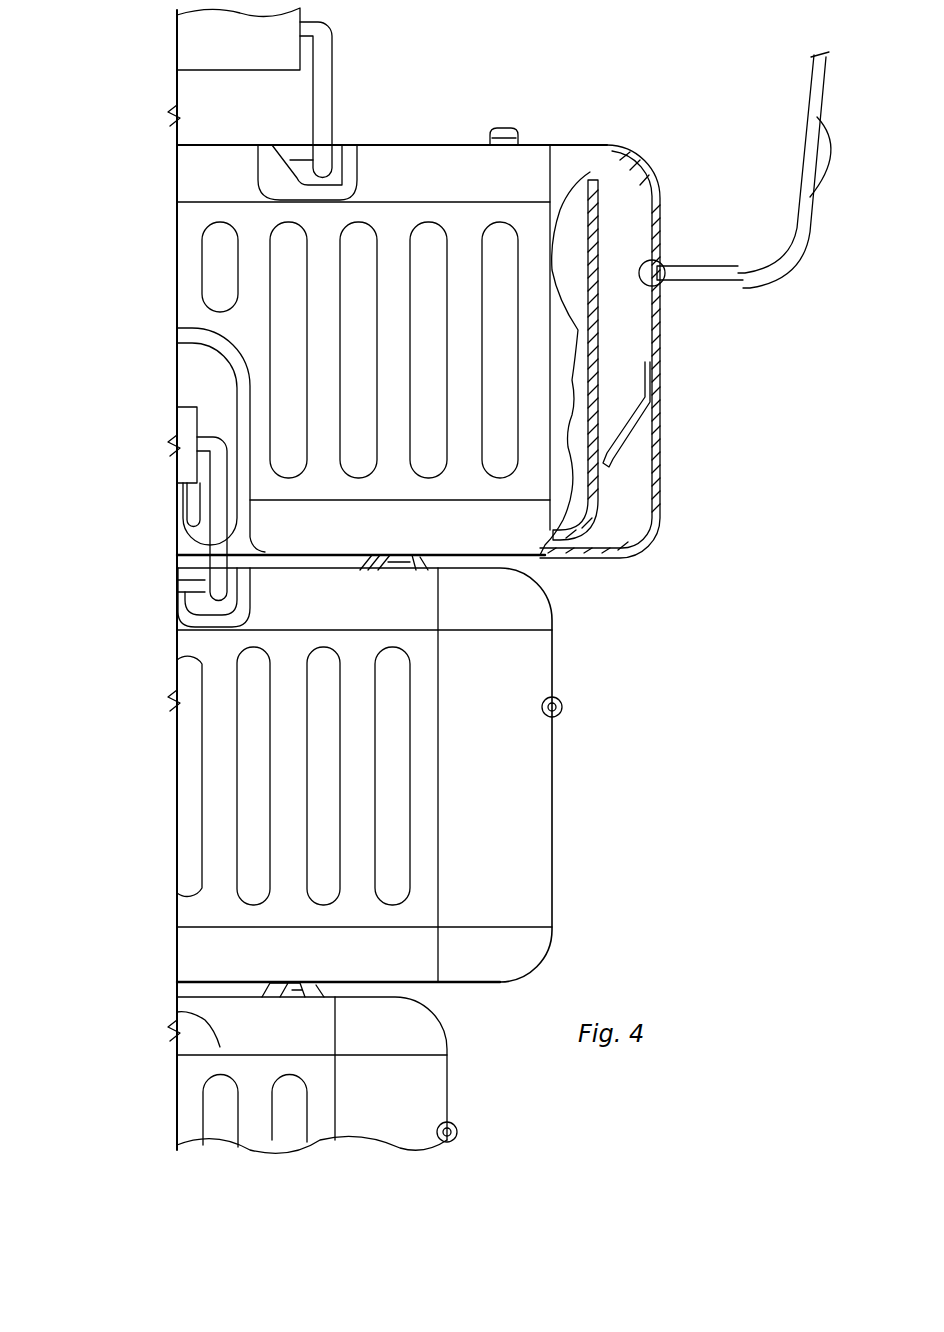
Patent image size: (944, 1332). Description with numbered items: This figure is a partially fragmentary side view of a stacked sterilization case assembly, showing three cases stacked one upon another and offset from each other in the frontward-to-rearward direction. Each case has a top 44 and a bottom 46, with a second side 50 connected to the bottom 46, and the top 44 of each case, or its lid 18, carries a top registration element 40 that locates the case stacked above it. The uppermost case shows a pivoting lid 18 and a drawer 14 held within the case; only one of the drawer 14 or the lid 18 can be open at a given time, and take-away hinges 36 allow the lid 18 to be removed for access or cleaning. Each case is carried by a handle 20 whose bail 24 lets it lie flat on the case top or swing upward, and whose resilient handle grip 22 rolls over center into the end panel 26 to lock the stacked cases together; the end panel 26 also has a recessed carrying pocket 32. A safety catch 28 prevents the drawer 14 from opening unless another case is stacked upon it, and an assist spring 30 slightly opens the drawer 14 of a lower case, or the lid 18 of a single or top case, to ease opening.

The drawer 14 is at (595, 213).
The lid 18 is at (813, 90).
The handle 20 is at (210, 38).
The handle grip 22 is at (238, 245).
The bail 24 is at (330, 80).
The end panel 26 is at (253, 215).
The safety catch 28 is at (500, 128).
The assist spring 30 is at (635, 448).
The recessed carrying pocket 32 is at (200, 380).
The take-away hinge 36 is at (663, 282).
The top registration element 40 is at (823, 173).
The top 44 is at (432, 143).
The bottom 46 is at (297, 553).
The second side 50 is at (660, 436).